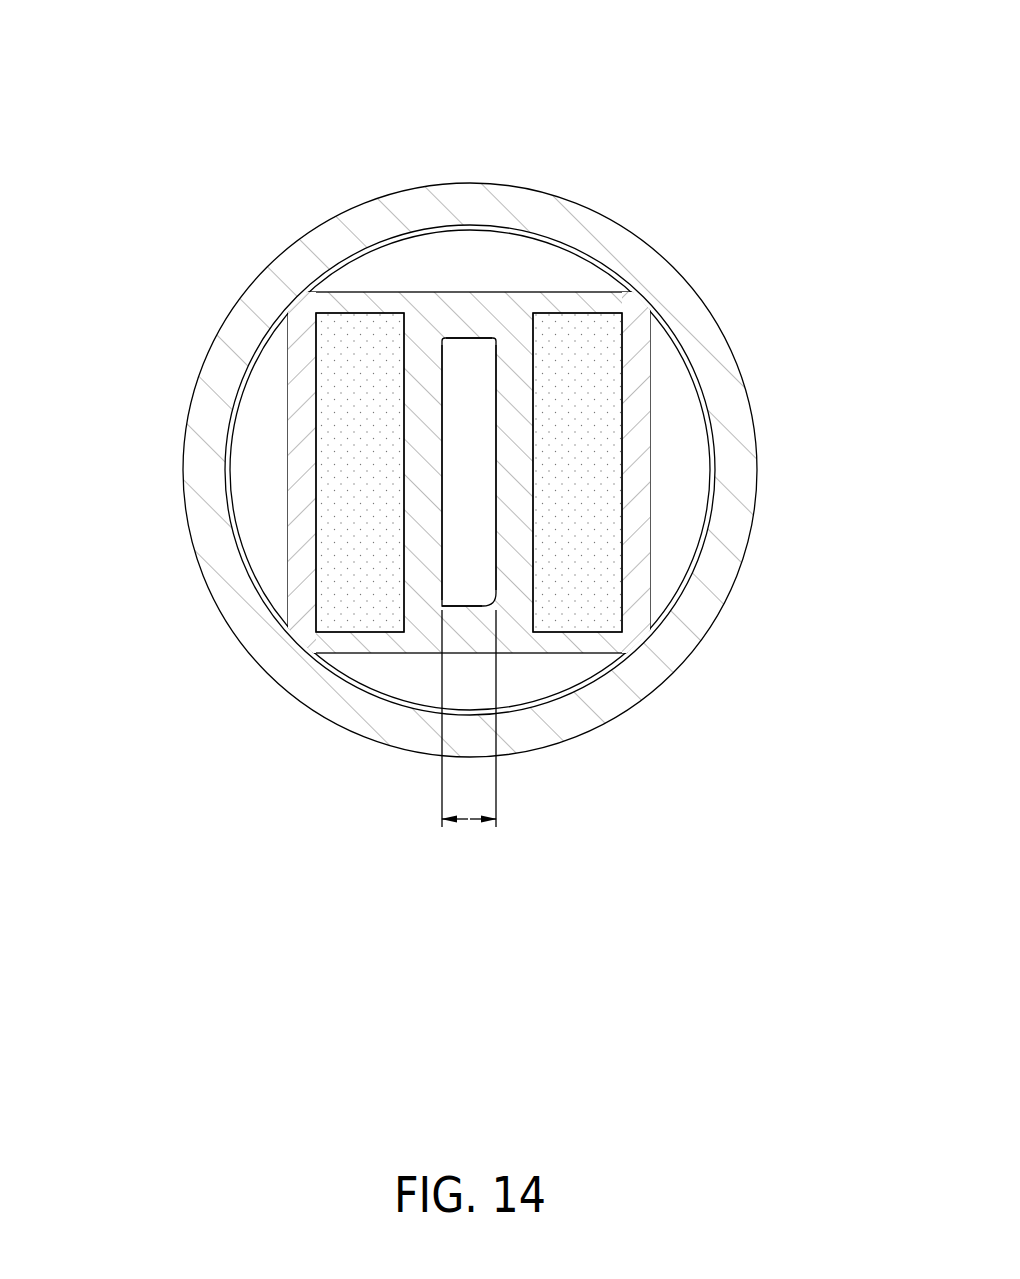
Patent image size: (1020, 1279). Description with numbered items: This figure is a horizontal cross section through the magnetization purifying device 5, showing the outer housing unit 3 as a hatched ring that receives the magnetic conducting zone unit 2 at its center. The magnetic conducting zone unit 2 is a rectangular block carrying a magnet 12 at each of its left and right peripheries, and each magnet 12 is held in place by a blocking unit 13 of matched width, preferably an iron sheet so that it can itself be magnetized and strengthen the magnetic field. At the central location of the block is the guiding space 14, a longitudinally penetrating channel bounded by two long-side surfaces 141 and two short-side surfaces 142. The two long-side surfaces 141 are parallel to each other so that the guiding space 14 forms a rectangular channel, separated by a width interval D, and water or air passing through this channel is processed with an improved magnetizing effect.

The magnetization purifying device 5 is at (473, 420).
The housing unit 3 is at (377, 218).
The magnetic conducting zone unit 2 is at (473, 449).
The magnet 12 is at (358, 358).
The blocking unit 13 is at (307, 558).
The guiding space 14 is at (473, 449).
The long-side surface 141 is at (440, 492).
The short-side surface 142 is at (462, 337).